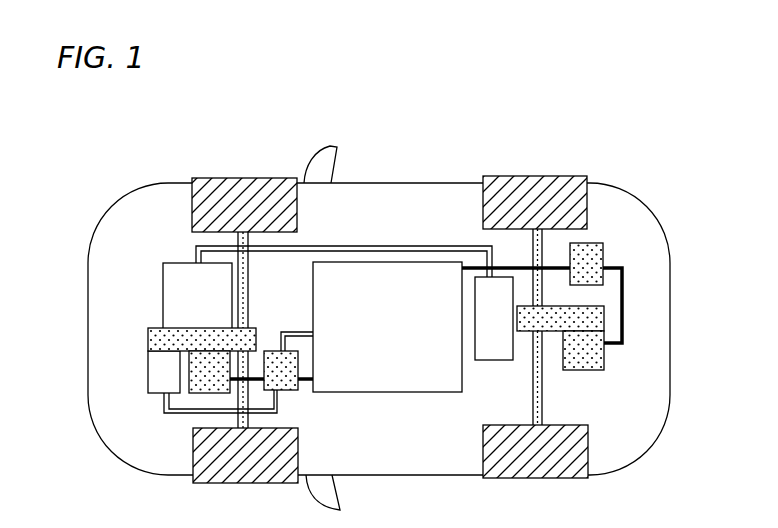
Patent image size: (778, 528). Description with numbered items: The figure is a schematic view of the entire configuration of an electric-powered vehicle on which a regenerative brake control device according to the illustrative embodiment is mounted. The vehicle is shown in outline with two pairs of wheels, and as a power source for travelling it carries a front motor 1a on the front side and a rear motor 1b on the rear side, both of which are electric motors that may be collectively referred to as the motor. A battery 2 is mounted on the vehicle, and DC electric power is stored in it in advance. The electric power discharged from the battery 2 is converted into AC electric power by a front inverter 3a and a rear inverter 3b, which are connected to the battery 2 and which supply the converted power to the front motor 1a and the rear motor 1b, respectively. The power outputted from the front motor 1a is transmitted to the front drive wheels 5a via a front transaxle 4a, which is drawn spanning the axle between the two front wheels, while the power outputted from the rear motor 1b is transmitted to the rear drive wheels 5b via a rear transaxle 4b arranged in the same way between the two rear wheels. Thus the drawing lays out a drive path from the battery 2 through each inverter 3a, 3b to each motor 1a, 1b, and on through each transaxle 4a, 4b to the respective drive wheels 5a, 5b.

The front motor 1a is at (193, 393).
The rear motor 1b is at (583, 370).
The battery 2 is at (412, 392).
The front inverter 3a is at (298, 388).
The rear inverter 3b is at (588, 243).
The front transaxle 4a is at (148, 342).
The rear transaxle 4b is at (604, 314).
The front drive wheels 5a is at (240, 178).
The rear drive wheels 5b is at (535, 176).